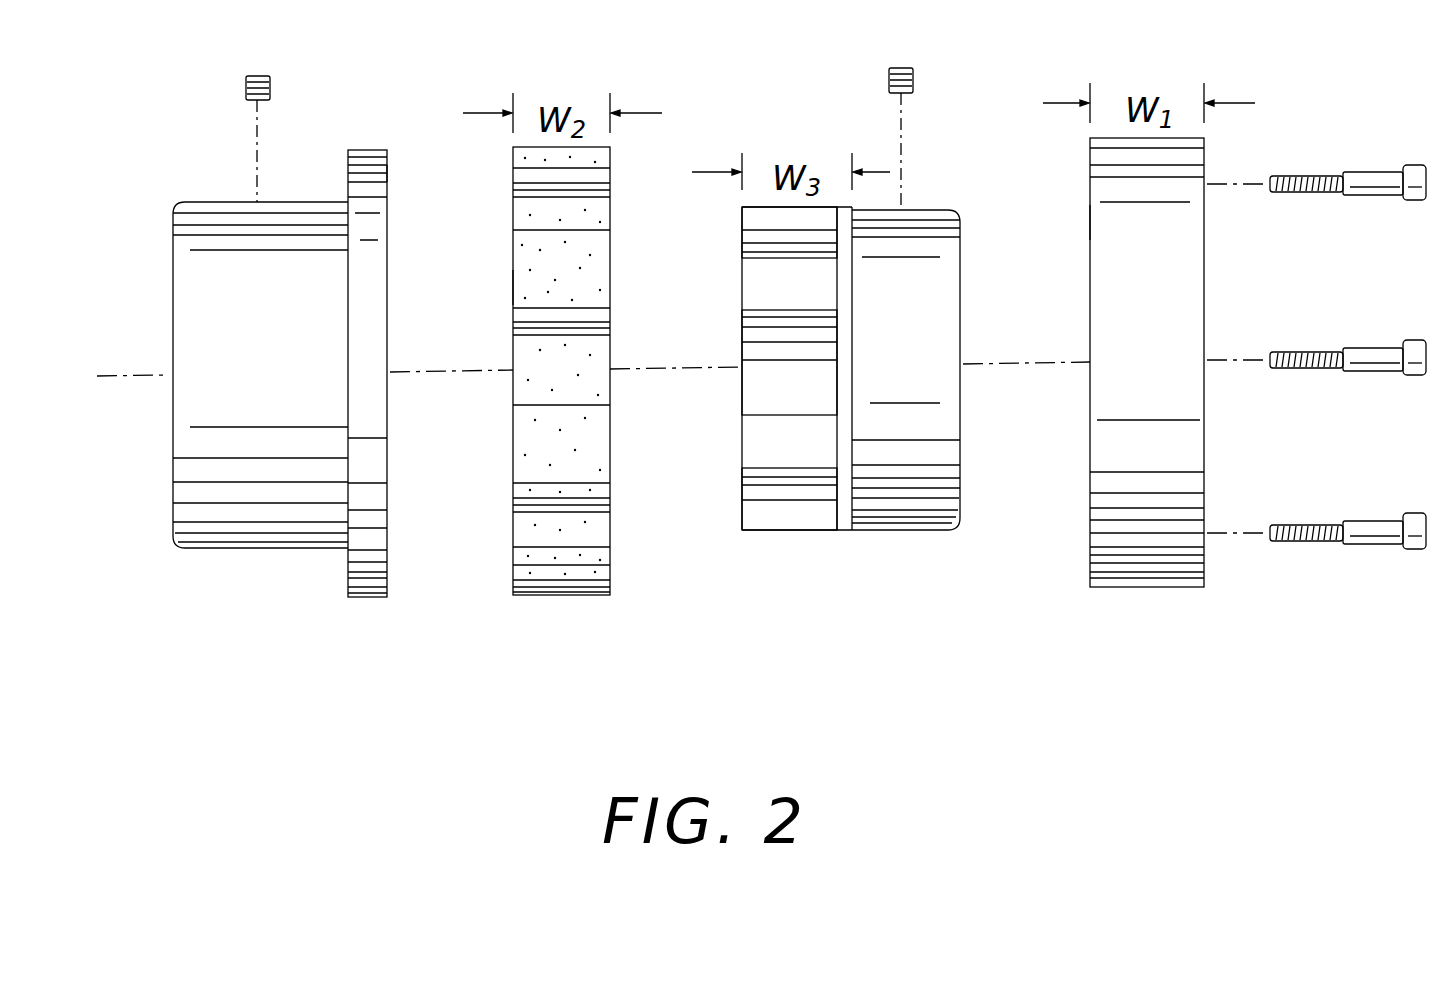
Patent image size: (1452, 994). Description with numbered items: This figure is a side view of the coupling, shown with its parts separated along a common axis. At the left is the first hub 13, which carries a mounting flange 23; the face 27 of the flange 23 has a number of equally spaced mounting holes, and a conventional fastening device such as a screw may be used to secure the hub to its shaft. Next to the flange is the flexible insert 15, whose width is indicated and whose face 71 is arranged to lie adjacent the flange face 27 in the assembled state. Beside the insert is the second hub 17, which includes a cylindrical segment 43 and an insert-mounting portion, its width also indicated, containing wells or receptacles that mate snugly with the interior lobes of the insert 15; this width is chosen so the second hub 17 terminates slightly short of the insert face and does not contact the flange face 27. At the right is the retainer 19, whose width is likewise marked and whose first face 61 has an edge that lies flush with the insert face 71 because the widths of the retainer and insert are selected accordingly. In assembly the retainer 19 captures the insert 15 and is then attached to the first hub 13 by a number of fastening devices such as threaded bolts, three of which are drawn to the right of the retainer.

The first hub 13 is at (283, 601).
The mounting flange 23 is at (367, 150).
The face of the flange 27 is at (387, 170).
The flexible insert 15 is at (582, 645).
The face of the insert 71 is at (508, 287).
The second hub 17 is at (825, 323).
The cylindrical segment 43 is at (927, 207).
The retainer member 19 is at (1168, 637).
The first face of the retainer 61 is at (1076, 222).